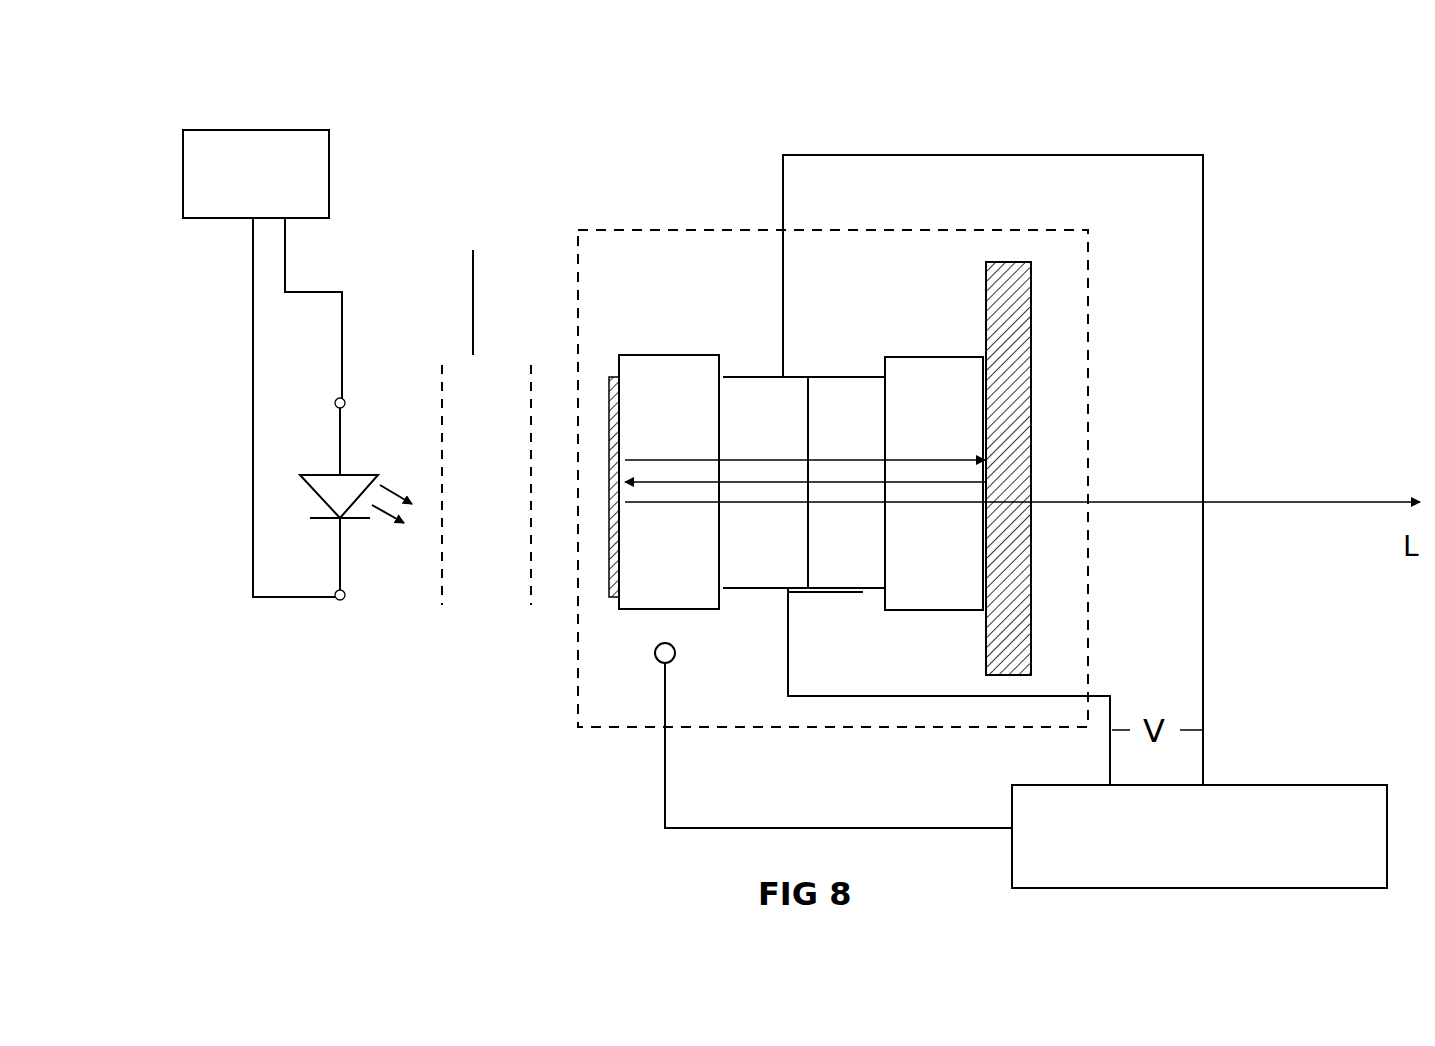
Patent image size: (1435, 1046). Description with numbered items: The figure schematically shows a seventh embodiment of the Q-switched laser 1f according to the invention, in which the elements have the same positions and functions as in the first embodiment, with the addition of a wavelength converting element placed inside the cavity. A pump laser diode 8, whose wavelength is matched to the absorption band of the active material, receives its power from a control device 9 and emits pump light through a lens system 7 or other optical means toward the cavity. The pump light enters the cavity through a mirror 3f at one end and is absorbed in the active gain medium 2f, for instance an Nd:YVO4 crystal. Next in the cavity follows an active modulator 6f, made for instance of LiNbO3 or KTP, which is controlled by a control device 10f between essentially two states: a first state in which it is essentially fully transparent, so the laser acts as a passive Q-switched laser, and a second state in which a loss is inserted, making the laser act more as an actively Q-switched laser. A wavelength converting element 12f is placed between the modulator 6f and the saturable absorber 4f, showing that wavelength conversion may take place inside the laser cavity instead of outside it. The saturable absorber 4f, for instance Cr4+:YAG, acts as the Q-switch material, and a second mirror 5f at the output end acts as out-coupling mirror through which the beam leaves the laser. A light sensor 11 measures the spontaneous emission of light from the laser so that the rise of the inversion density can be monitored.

The control device 9 is at (240, 130).
The laser diode 8 is at (355, 530).
The lens system 7 is at (486, 404).
The Q-switched laser 1f is at (575, 290).
The active gain medium 2f is at (653, 355).
The mirror 3f is at (608, 590).
The active modulator 6f is at (750, 377).
The saturable absorber 4f is at (928, 357).
The second mirror 5f is at (1033, 343).
The control device 10f is at (1265, 785).
The light sensor 11 is at (833, 733).
The wavelength converting element 12f is at (863, 588).